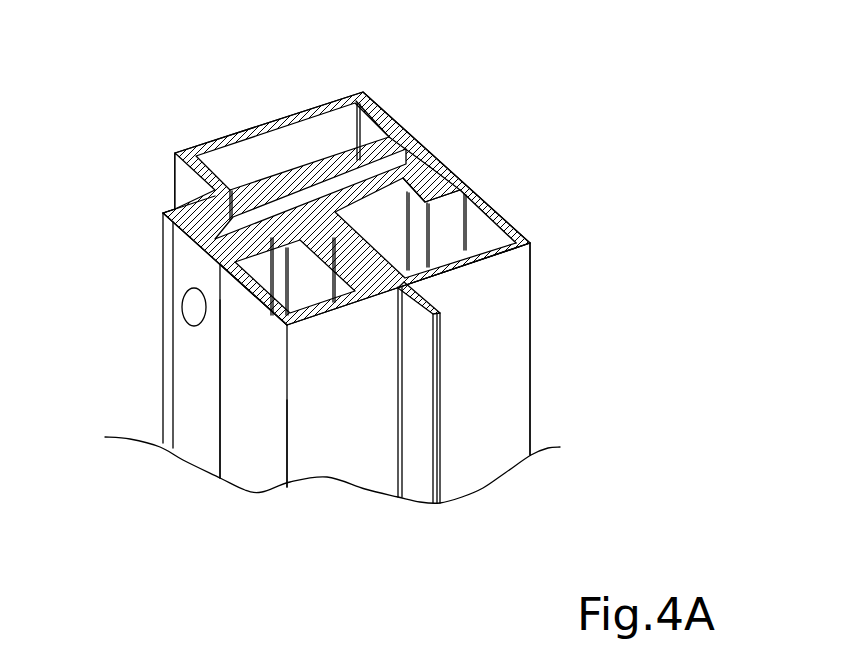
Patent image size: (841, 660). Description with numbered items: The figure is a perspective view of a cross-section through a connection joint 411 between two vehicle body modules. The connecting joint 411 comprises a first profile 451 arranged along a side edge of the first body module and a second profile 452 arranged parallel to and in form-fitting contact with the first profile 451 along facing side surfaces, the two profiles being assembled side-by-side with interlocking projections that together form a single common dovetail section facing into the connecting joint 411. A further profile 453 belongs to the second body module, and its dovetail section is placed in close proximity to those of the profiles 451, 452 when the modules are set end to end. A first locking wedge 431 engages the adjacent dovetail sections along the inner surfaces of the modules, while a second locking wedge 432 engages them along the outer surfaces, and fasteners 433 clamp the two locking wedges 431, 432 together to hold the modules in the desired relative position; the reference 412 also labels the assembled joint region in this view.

The connection joint 411 is at (447, 65).
The second frame profile 412 is at (572, 289).
The first locking wedge 431 is at (190, 360).
The second locking wedge 432 is at (433, 162).
The fastener 433 is at (192, 303).
The first profile 451 is at (257, 467).
The second profile 452 is at (512, 377).
The profile 453 is at (193, 152).